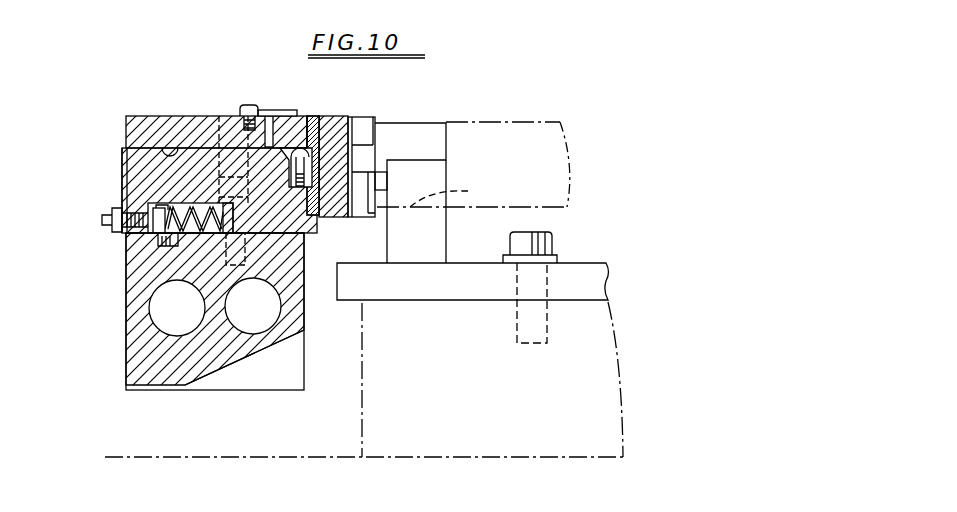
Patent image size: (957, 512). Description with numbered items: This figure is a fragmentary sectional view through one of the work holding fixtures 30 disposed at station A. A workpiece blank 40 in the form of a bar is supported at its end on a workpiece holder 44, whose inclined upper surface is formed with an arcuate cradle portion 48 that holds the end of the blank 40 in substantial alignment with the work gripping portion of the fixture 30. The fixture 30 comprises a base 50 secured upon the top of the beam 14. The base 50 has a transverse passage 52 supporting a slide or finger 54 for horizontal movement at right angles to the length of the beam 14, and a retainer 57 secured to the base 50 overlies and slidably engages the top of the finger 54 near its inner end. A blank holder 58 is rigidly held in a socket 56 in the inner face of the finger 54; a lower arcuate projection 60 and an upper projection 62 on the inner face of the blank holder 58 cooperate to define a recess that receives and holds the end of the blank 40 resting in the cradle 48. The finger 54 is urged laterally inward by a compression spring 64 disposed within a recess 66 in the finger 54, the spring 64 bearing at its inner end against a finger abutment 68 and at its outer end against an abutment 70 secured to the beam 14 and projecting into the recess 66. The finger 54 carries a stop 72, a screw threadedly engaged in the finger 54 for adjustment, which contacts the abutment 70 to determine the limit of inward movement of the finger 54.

The beam 14 is at (185, 311).
The work holding fixture 30 is at (195, 169).
The workpiece blank 40 is at (547, 145).
The workpiece holder 44 is at (415, 248).
The arcuate cradle portion 48 is at (454, 194).
The base 50 is at (143, 118).
The transverse passage 52 is at (185, 147).
The finger 54 is at (125, 192).
The socket 56 is at (313, 120).
The retainer 57 is at (268, 108).
The blank holder 58 is at (338, 120).
The lower arcuate projection 60 is at (380, 170).
The upper projection 62 is at (365, 132).
The compression spring 64 is at (177, 308).
The recess 66 is at (200, 200).
The finger abutment 68 is at (233, 220).
The abutment 70 is at (158, 240).
The stop 72 is at (102, 220).
The station A is at (619, 294).